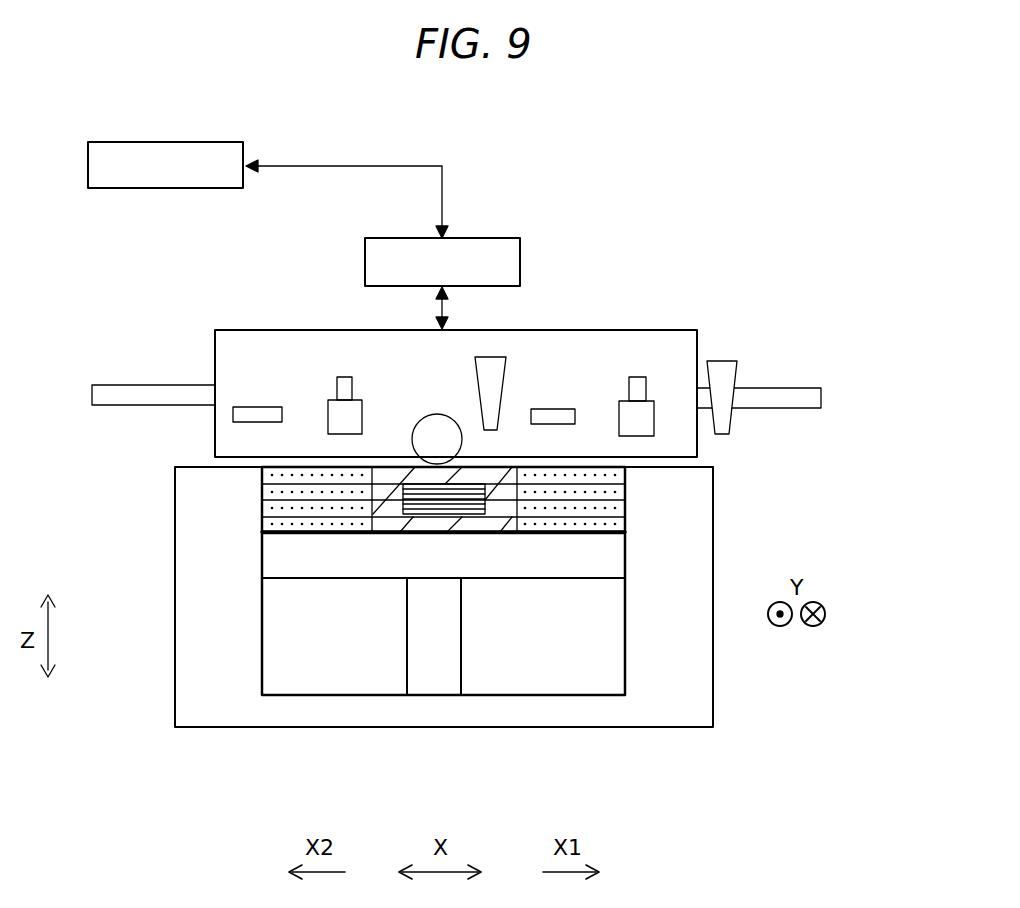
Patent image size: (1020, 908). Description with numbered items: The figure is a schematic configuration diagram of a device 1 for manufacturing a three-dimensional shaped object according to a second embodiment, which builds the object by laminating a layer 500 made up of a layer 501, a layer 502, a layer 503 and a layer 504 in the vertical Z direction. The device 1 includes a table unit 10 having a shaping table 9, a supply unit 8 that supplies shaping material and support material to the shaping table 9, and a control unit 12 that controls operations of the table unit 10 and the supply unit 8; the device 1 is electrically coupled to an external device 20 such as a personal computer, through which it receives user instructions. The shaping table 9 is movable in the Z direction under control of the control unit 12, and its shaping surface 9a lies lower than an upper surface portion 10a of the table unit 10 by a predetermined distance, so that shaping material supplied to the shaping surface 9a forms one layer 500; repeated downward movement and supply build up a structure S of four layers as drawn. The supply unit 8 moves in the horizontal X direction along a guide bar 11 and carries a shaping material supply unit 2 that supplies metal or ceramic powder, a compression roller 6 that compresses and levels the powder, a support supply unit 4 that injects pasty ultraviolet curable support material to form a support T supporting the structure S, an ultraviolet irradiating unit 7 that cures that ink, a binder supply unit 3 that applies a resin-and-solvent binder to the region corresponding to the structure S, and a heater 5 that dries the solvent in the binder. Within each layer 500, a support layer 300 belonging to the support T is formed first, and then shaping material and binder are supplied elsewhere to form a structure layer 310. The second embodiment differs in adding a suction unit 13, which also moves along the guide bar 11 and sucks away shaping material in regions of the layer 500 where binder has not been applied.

The device for manufacturing a three-dimensional shaped object 1 is at (849, 327).
The shaping material supply unit 2 is at (488, 357).
The binder supply unit 3 is at (343, 377).
The support supply unit 4 is at (637, 377).
The heater 5 is at (255, 407).
The compression roller 6 is at (438, 414).
The ultraviolet irradiating unit 7 is at (551, 409).
The supply unit 8 is at (300, 330).
The shaping table 9 is at (300, 563).
The shaping surface 9a is at (263, 535).
The table unit 10 is at (390, 631).
The upper surface portion 10a is at (215, 466).
The guide bar 11 is at (757, 389).
The control unit 12 is at (503, 238).
The suction unit 13 is at (722, 361).
The external device 20 is at (138, 142).
The support layer 300 is at (438, 507).
The structure layer 310 is at (388, 525).
The layer 500 is at (437, 508).
The layer 501 is at (262, 523).
The layer 502 is at (262, 505).
The layer 503 is at (262, 488).
The layer 504 is at (262, 470).
The structure S is at (385, 636).
The support T is at (447, 644).